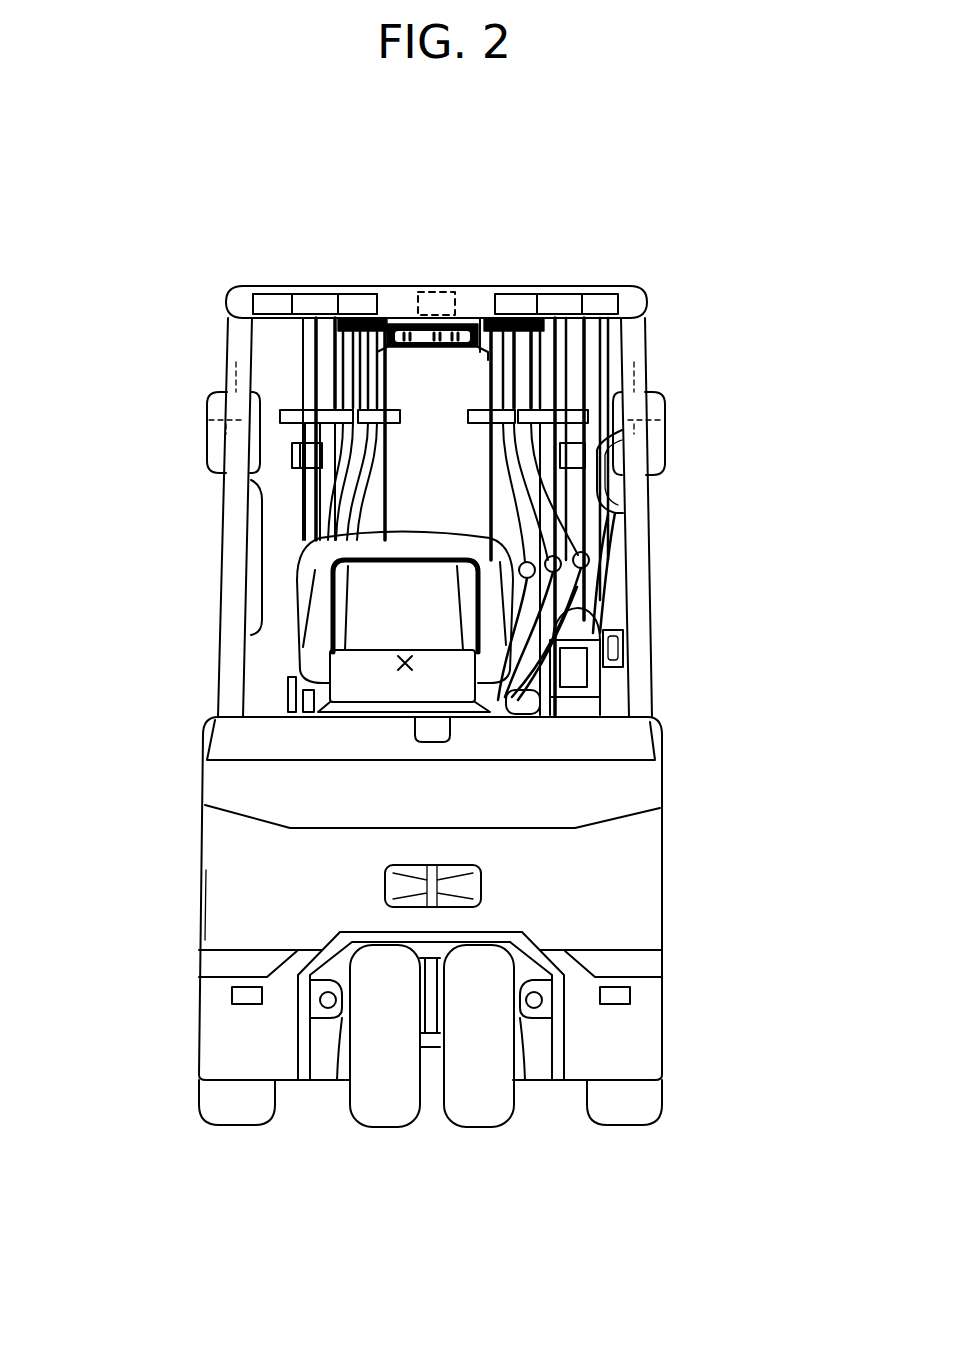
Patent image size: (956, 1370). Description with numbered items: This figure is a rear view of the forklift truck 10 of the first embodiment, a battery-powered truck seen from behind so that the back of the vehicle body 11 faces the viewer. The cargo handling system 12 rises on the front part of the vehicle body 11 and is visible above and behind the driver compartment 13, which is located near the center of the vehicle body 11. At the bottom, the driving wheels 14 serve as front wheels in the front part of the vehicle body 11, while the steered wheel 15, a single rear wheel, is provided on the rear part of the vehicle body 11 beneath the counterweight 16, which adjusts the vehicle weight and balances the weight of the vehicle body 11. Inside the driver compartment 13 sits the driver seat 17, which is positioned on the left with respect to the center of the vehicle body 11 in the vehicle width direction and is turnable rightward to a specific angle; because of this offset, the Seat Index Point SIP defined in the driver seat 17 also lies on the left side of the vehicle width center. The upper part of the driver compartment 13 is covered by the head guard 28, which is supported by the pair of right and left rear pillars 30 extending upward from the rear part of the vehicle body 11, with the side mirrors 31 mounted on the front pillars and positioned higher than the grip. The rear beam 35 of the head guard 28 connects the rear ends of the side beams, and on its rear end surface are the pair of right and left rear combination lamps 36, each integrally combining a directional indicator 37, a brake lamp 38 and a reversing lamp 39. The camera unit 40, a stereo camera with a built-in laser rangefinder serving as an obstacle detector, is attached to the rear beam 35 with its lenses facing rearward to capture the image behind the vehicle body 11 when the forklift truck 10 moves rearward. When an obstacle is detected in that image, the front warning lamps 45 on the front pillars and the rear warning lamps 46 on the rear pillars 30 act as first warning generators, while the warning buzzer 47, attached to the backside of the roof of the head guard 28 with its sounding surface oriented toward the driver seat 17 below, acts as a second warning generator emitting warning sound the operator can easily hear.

The forklift truck 10 is at (675, 227).
The vehicle body 11 is at (665, 904).
The cargo handling system 12 is at (300, 367).
The driver compartment 13 is at (408, 515).
The driving wheels 14 is at (198, 1083).
The steered wheel 15 is at (378, 1129).
The counterweight 16 is at (232, 885).
The driver seat 17 is at (438, 530).
The head guard 28 is at (411, 286).
The rear pillars 30 is at (227, 507).
The side mirrors 31 is at (207, 446).
The rear beam 35 is at (541, 295).
The rear combination lamps 36 is at (242, 230).
The directional indicator 37 is at (275, 295).
The brake lamp 38 is at (318, 295).
The reversing lamp 39 is at (360, 295).
The camera unit 40 is at (462, 321).
The front warning lamps 45 is at (227, 373).
The rear warning lamps 46 is at (205, 422).
The warning buzzer 47 is at (437, 290).
The Seat Index Point SIP is at (397, 667).